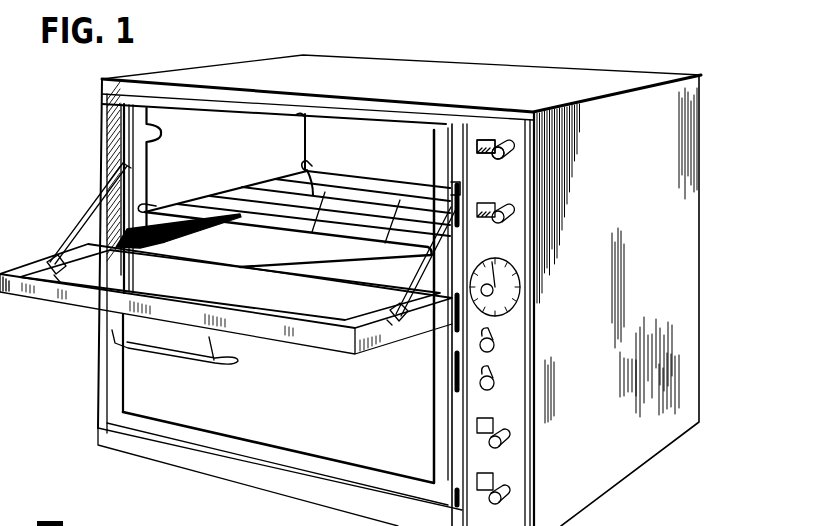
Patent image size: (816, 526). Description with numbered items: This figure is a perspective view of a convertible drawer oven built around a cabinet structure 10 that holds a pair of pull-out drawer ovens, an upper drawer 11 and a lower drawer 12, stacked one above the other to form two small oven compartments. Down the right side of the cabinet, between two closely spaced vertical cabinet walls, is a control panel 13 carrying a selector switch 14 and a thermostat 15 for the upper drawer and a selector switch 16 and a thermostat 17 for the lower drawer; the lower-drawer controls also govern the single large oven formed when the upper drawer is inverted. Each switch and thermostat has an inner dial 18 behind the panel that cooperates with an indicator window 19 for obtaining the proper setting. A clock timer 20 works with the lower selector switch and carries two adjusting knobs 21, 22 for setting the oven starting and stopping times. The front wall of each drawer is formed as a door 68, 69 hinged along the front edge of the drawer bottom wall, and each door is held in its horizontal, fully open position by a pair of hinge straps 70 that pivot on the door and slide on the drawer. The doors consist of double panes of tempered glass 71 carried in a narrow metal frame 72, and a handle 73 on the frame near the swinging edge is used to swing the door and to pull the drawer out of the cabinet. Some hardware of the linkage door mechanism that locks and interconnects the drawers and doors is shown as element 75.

The cabinet structure 10 is at (579, 72).
The upper pull-out drawer oven 11 is at (201, 139).
The lower pull-out drawer oven 12 is at (137, 382).
The control panel 13 is at (510, 190).
The selector switch 14 is at (501, 161).
The thermostat 15 is at (501, 225).
The selector switch 16 is at (493, 445).
The thermostat 17 is at (504, 486).
The inner dial 18 is at (482, 140).
The indicator window 19 is at (493, 140).
The clock timer 20 is at (513, 302).
The adjusting knob 21 is at (493, 350).
The adjusting knob 22 is at (493, 388).
The door 68 is at (65, 307).
The door 69 is at (115, 407).
The hinge strap 70 is at (90, 209).
The tempered glass pane 71 is at (53, 276).
The metal frame 72 is at (16, 294).
The handle 73 is at (163, 353).
The door mechanism hardware 75 is at (448, 176).